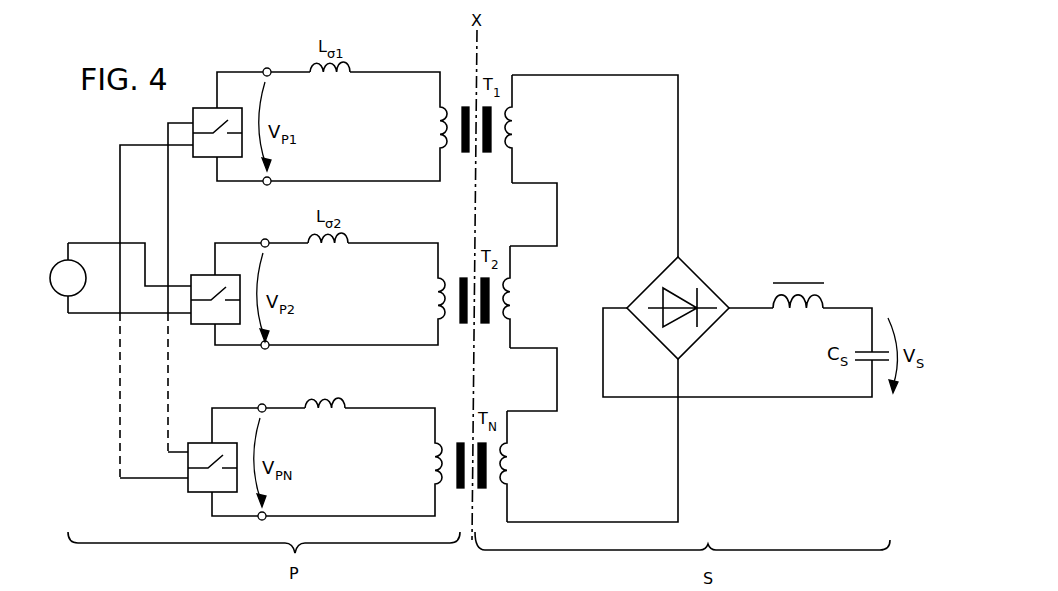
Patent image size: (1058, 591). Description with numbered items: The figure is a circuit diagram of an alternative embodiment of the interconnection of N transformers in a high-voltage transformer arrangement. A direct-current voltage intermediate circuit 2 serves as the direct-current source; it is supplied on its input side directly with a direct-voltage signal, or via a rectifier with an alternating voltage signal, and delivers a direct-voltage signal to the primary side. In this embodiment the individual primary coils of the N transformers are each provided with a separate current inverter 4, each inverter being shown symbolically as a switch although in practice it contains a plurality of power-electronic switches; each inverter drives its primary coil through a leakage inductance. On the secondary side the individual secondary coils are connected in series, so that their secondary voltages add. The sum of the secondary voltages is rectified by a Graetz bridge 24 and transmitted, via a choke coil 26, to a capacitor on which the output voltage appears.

The direct-current voltage intermediate circuit 2 is at (86, 278).
The current inverter 4 is at (217, 286).
The Graetz bridge 24 is at (700, 335).
The choke coil 26 is at (800, 283).